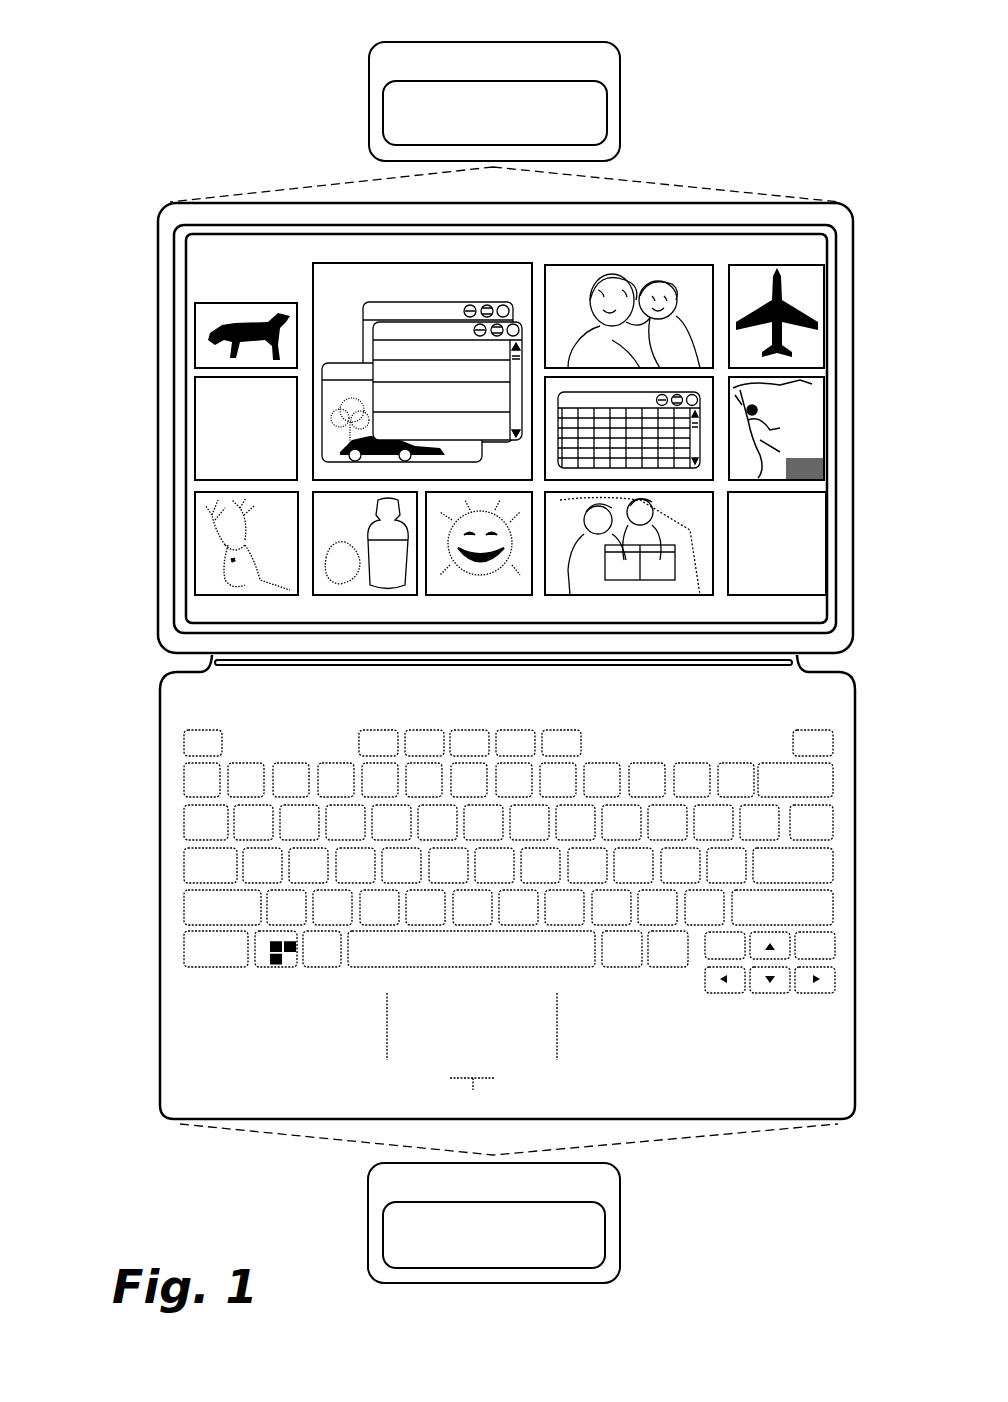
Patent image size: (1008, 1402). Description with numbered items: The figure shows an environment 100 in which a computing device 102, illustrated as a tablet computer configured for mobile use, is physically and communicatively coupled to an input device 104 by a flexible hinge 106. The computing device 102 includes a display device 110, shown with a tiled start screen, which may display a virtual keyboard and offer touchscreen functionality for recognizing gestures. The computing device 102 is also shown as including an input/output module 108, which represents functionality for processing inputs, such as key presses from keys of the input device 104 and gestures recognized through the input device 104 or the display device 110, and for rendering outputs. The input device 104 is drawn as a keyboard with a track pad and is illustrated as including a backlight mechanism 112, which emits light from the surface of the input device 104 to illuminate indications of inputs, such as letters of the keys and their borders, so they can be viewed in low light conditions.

The environment 100 is at (153, 90).
The computing device 102 is at (601, 71).
The input device 104 is at (572, 1193).
The flexible hinge 106 is at (150, 663).
The input/output module 108 is at (548, 133).
The display device 110 is at (186, 430).
The backlight mechanism 112 is at (567, 1256).